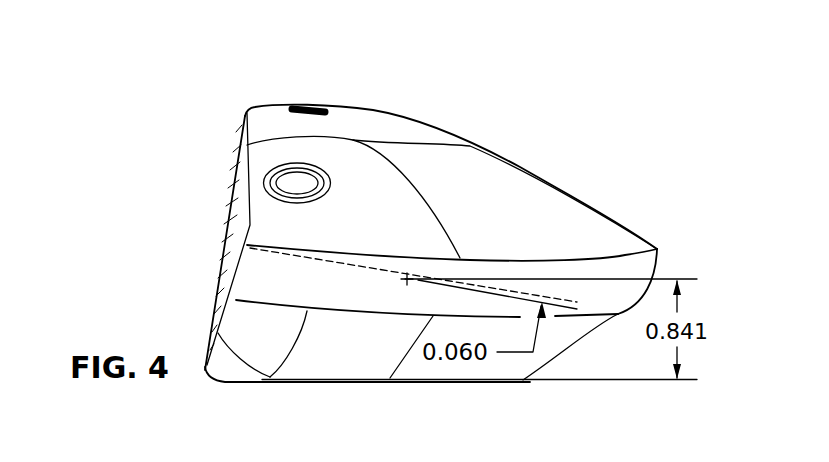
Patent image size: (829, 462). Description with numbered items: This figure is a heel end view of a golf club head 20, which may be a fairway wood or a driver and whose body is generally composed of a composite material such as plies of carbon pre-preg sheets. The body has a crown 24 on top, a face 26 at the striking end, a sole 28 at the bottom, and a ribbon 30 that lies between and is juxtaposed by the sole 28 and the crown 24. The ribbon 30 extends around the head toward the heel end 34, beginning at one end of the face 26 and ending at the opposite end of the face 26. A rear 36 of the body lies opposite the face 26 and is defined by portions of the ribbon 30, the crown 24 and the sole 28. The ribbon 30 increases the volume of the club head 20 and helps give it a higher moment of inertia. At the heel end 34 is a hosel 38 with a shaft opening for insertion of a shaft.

The golf club head 20 is at (423, 100).
The crown 24 is at (542, 188).
The face 26 is at (228, 187).
The sole 28 is at (308, 367).
The ribbon 30 is at (265, 272).
The heel end 34 is at (408, 395).
The rear 36 is at (670, 255).
The hosel 38 is at (295, 177).